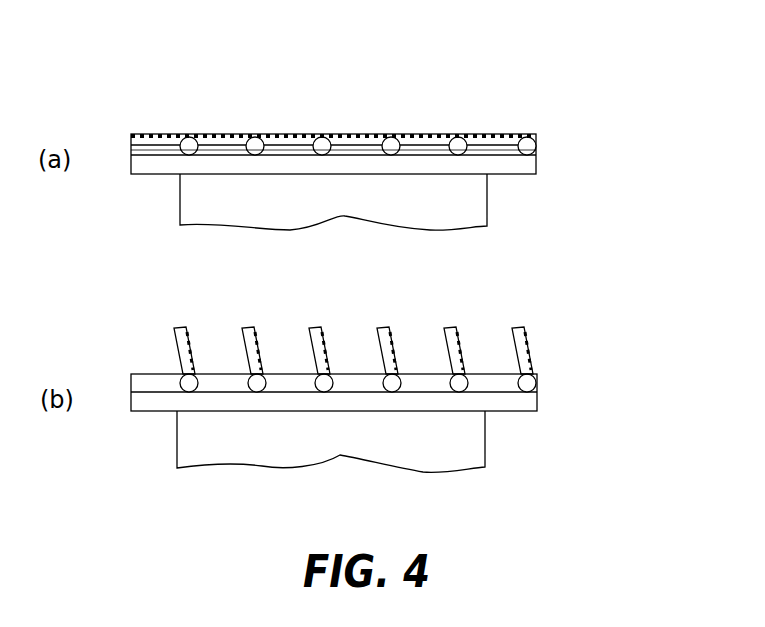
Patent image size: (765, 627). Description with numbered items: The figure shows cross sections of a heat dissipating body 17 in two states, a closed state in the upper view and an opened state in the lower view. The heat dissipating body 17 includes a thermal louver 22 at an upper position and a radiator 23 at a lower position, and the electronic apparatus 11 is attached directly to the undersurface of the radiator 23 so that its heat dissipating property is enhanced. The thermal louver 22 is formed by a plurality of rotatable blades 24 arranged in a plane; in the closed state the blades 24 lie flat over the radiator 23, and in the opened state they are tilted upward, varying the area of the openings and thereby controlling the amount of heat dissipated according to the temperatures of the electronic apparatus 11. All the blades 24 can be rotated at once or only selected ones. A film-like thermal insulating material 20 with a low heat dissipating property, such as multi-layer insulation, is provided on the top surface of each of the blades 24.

The electronic apparatus 11 is at (468, 212).
The heat dissipating body 17 is at (633, 102).
The thermal insulating material 20 is at (223, 136).
The thermal louver 22 is at (540, 133).
The radiator 23 is at (528, 157).
The blades 24 is at (153, 140).